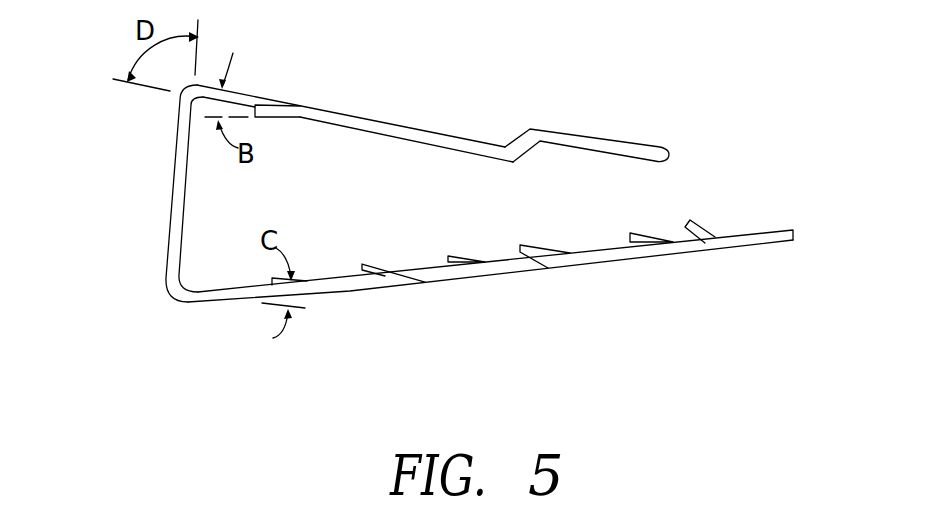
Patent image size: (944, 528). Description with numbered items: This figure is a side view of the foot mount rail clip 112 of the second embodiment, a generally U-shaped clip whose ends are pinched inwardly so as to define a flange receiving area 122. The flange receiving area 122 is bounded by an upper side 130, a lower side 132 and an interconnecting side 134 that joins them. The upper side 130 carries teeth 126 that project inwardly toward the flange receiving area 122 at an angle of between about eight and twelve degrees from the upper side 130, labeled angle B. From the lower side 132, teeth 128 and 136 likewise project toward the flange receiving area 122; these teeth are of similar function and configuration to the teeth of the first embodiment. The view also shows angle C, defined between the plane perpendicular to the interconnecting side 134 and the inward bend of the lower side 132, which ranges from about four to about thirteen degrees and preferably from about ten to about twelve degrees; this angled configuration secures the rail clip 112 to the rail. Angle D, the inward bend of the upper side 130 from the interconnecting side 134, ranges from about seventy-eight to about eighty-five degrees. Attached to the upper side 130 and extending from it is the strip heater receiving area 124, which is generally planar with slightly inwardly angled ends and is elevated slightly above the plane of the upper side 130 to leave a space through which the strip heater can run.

The foot mount rail clip 112 is at (706, 115).
The flange receiving area 122 is at (395, 226).
The strip heater receiving area 124 is at (562, 130).
The teeth 126 is at (259, 102).
The teeth 128 is at (537, 245).
The upper side 130 is at (333, 105).
The lower side 132 is at (418, 283).
The interconnecting side 134 is at (171, 212).
The teeth 136 is at (652, 240).